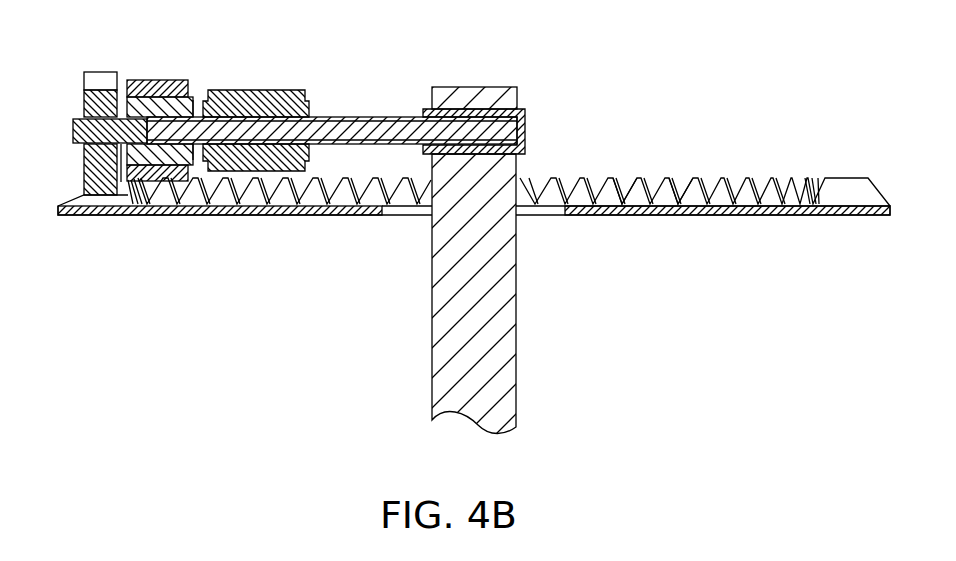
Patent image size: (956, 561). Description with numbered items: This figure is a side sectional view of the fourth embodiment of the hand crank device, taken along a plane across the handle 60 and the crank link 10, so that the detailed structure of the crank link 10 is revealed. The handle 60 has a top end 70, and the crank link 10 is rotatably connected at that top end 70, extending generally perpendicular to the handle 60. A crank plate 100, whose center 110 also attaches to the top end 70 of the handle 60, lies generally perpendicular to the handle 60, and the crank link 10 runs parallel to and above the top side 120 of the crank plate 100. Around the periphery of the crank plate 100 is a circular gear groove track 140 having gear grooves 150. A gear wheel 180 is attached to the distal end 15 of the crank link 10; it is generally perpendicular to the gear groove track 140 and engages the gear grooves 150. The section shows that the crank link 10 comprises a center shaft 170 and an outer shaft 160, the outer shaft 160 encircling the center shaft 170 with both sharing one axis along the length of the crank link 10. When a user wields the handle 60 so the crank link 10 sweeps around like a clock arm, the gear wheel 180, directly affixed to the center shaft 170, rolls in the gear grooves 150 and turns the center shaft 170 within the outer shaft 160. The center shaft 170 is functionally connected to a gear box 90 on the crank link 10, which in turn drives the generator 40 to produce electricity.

The crank link 10 is at (366, 104).
The distal end 15 is at (121, 117).
The generator 40 is at (259, 90).
The handle 60 is at (501, 294).
The top end 70 is at (473, 87).
The gear box 90 is at (159, 80).
The crank plate 100 is at (285, 216).
The center 110 is at (507, 251).
The top side 120 is at (575, 192).
The gear groove track 140 is at (680, 187).
The gear grooves 150 is at (624, 184).
The outer shaft 160 is at (202, 117).
The center shaft 170 is at (73, 128).
The gear wheel 180 is at (84, 97).